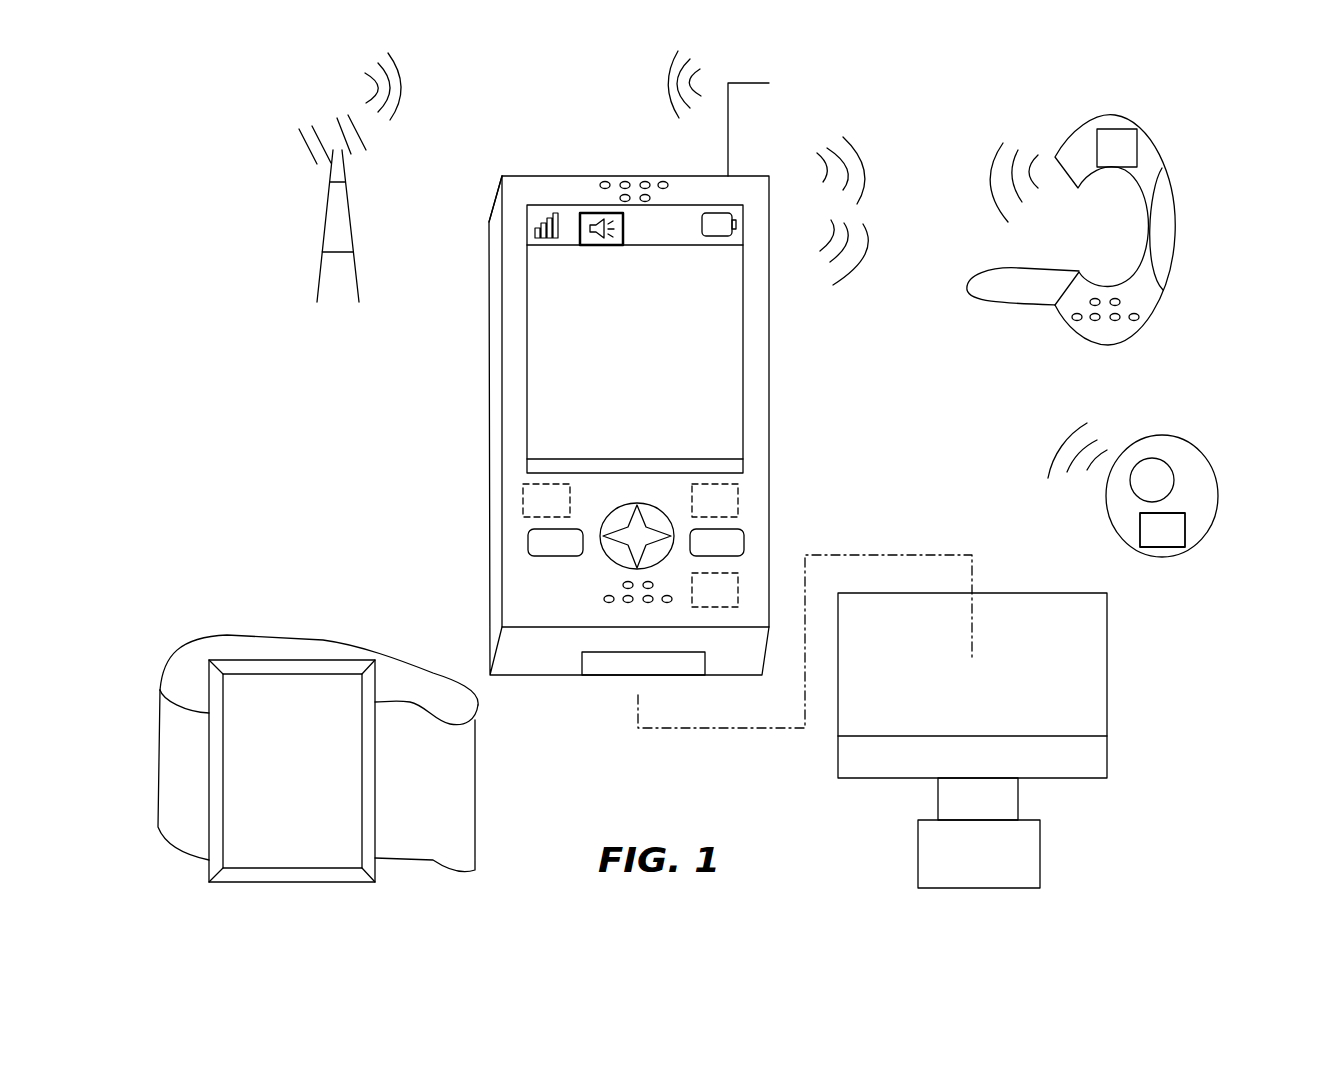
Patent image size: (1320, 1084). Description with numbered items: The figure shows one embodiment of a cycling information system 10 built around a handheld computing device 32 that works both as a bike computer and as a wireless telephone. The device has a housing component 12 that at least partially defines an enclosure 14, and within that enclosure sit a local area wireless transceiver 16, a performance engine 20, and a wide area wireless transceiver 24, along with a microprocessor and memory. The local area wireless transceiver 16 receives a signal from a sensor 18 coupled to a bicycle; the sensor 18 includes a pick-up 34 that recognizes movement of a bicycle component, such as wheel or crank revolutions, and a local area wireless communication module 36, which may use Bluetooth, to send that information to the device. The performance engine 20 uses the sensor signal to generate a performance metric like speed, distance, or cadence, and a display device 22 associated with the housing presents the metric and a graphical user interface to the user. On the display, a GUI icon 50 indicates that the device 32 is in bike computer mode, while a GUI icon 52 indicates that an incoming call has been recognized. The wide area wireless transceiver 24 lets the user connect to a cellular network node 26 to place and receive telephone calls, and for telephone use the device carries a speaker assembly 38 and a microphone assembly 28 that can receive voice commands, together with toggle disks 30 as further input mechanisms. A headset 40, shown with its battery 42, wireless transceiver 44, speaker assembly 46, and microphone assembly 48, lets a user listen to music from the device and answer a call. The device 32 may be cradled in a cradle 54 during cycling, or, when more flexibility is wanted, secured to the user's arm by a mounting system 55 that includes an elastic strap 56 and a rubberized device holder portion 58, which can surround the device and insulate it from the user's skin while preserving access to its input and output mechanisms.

The cycling information system 10 is at (226, 451).
The housing component 12 is at (529, 607).
The enclosure 14 is at (558, 653).
The local area wireless transceiver 16 is at (705, 603).
The sensor 18 is at (1229, 468).
The performance engine 20 is at (537, 511).
The display device 22 is at (478, 212).
The wide area wireless transceiver 24 is at (707, 511).
The cellular network node 26 is at (312, 280).
The microphone assembly 28 is at (593, 582).
The toggle disk 30 is at (674, 527).
The computing device 32 is at (490, 173).
The pick-up 34 is at (1143, 491).
The local area wireless communication module 36 is at (1153, 547).
The speaker assembly 38 is at (622, 173).
The headset 40 is at (1161, 128).
The battery 42 is at (1185, 232).
The wireless transceiver 44 is at (1108, 160).
The speaker assembly 46 is at (1095, 322).
The microphone assembly 48 is at (1003, 298).
The GUI icon 50 is at (715, 427).
The GUI icon 52 is at (588, 208).
The cradle 54 is at (966, 772).
The mounting system 55 is at (268, 608).
The elastic strap 56 is at (419, 800).
The device holder portion 58 is at (286, 780).